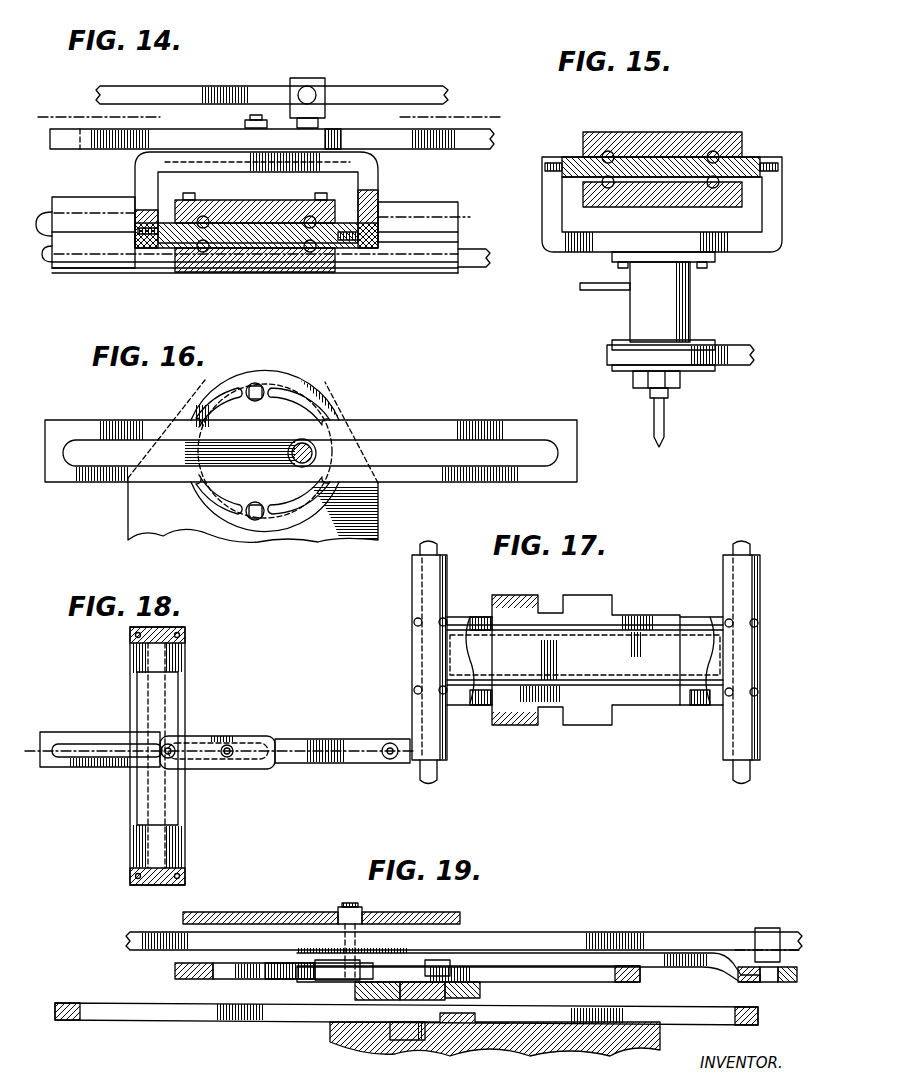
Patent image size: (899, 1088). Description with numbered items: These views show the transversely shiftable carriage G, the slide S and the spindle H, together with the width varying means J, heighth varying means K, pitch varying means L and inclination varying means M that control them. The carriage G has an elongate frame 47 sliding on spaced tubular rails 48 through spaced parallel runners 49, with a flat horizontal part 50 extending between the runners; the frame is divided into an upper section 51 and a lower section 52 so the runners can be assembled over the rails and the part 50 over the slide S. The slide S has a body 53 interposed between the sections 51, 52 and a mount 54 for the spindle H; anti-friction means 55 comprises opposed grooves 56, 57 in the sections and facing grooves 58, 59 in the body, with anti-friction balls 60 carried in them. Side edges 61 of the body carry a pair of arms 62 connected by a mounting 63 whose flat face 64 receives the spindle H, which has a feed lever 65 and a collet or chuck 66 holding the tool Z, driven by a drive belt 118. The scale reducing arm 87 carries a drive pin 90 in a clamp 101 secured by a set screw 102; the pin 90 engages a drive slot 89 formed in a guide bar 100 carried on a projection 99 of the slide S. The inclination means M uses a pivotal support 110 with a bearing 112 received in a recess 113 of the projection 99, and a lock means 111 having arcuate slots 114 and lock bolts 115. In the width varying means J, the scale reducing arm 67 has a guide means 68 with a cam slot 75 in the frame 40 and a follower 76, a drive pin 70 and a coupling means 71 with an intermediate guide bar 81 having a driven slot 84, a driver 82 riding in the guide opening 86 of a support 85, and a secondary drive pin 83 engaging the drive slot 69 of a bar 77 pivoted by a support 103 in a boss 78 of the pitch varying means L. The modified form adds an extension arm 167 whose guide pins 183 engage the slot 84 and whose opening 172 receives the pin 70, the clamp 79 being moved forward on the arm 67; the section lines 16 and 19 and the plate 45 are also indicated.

In FIG. 14, the section line of FIG. 16 is at (47, 115).
In FIG. 18, the section line of FIG. 19 is at (33, 756).
In FIG. 19, the frame 40 is at (232, 928).
In FIG. 19, the plate 45 is at (258, 912).
In FIG. 14, the frame 47 is at (75, 272).
In FIG. 15, the frame 47 is at (667, 128).
In FIG. 17, the frame 47 is at (452, 584).
In FIG. 14, the rails 48 is at (470, 262).
In FIG. 17, the rails 48 is at (445, 774).
In FIG. 14, the runners 49 is at (432, 208).
In FIG. 17, the runners 49 is at (412, 604).
In FIG. 14, the flat horizontal part 50 is at (277, 268).
In FIG. 15, the flat horizontal part 50 is at (650, 199).
In FIG. 17, the flat horizontal part 50 is at (690, 703).
In FIG. 14, the upper section 51 is at (240, 200).
In FIG. 15, the upper section 51 is at (630, 156).
In FIG. 17, the upper section 51 is at (458, 620).
In FIG. 14, the lower section 52 is at (235, 272).
In FIG. 15, the lower section 52 is at (690, 200).
In FIG. 17, the lower section 52 is at (468, 705).
In FIG. 14, the body 53 is at (352, 255).
In FIG. 15, the body 53 is at (571, 156).
In FIG. 15, the mount 54 is at (542, 200).
In FIG. 14, the anti-friction means 55 is at (208, 256).
In FIG. 15, the anti-friction means 55 is at (718, 150).
In FIG. 14, the groove 56 is at (206, 218).
In FIG. 15, the groove 56 is at (608, 151).
In FIG. 14, the groove 57 is at (310, 254).
In FIG. 15, the groove 57 is at (608, 190).
In FIG. 17, the groove 57 is at (692, 628).
In FIG. 14, the groove 58 is at (308, 218).
In FIG. 15, the groove 58 is at (709, 150).
In FIG. 17, the groove 58 is at (595, 680).
In FIG. 14, the groove 59 is at (200, 254).
In FIG. 15, the groove 59 is at (716, 190).
In FIG. 14, the anti-friction balls 60 is at (362, 226).
In FIG. 15, the anti-friction balls 60 is at (602, 184).
In FIG. 15, the side edges 61 is at (548, 178).
In FIG. 15, the arms 62 is at (545, 226).
In FIG. 15, the mounting 63 is at (728, 246).
In FIG. 15, the face 64 is at (592, 252).
In FIG. 15, the lever 65 is at (595, 290).
In FIG. 15, the collet or chuck 66 is at (638, 382).
In FIG. 19, the scale reducing arm 67 is at (653, 930).
In FIG. 19, the guide means 68 is at (335, 918).
In FIG. 19, the drive slot 69 is at (135, 1012).
In FIG. 18, the drive pin 70 is at (388, 758).
In FIG. 19, the drive pin 70 is at (784, 984).
In FIG. 18, the coupling means 71 is at (188, 676).
In FIG. 19, the coupling means 71 is at (175, 968).
In FIG. 19, the cam slot 75 is at (368, 909).
In FIG. 19, the follower 76 is at (347, 907).
In FIG. 19, the bar 77 is at (66, 1000).
In FIG. 19, the boss 78 is at (640, 1035).
In FIG. 19, the clamp 79 is at (766, 928).
In FIG. 18, the intermediate guide bar 81 is at (75, 732).
In FIG. 19, the intermediate guide bar 81 is at (632, 982).
In FIG. 18, the driver 82 is at (178, 709).
In FIG. 19, the driver 82 is at (470, 992).
In FIG. 19, the secondary drive pin 83 is at (405, 1030).
In FIG. 18, the driven slot 84 is at (98, 756).
In FIG. 19, the driven slot 84 is at (216, 978).
In FIG. 18, the support 85 is at (134, 656).
In FIG. 19, the support 85 is at (354, 991).
In FIG. 18, the guide opening 86 is at (134, 846).
In FIG. 19, the guide opening 86 is at (408, 982).
In FIG. 14, the scale reducing arm 87 is at (250, 88).
In FIG. 16, the drive slot 89 is at (447, 442).
In FIG. 14, the drive pin 90 is at (261, 113).
In FIG. 16, the drive pin 90 is at (288, 453).
In FIG. 14, the projection 99 is at (362, 160).
In FIG. 16, the projection 99 is at (348, 535).
In FIG. 14, the guide bar 100 is at (115, 150).
In FIG. 16, the guide bar 100 is at (100, 420).
In FIG. 14, the clamp 101 is at (305, 78).
In FIG. 14, the set screw 102 is at (316, 95).
In FIG. 19, the pivotal support 103 is at (340, 1026).
In FIG. 14, the pivotal support 110 is at (338, 132).
In FIG. 16, the pivotal support 110 is at (298, 387).
In FIG. 16, the lock means 111 is at (262, 385).
In FIG. 14, the bearing 112 is at (210, 165).
In FIG. 14, the recess 113 is at (320, 152).
In FIG. 16, the arcuate slots 114 is at (300, 405).
In FIG. 16, the lock bolts 115 is at (252, 400).
In FIG. 15, the drive belt 118 is at (735, 366).
In FIG. 18, the extension arm 167 is at (308, 738).
In FIG. 19, the extension arm 167 is at (660, 966).
In FIG. 18, the opening 172 is at (393, 742).
In FIG. 19, the opening 172 is at (748, 994).
In FIG. 18, the guide pins 183 is at (239, 738).
In FIG. 19, the guide pins 183 is at (318, 968).
In FIG. 14, the transversely shiftable carriage G is at (405, 274).
In FIG. 15, the transversely shiftable carriage G is at (695, 128).
In FIG. 17, the transversely shiftable carriage G is at (720, 584).
In FIG. 19, the transversely shiftable carriage G is at (318, 1040).
In FIG. 15, the work cutting spindle H is at (703, 302).
In FIG. 19, the width varying means J is at (585, 930).
In FIG. 14, the heighth varying means K is at (393, 84).
In FIG. 19, the vertical pitch varying means L is at (213, 1025).
In FIG. 14, the horizontal inclination varying means M is at (450, 128).
In FIG. 16, the horizontal inclination varying means M is at (378, 424).
In FIG. 14, the slide S is at (148, 252).
In FIG. 15, the slide S is at (753, 159).
In FIG. 16, the slide S is at (128, 522).
In FIG. 17, the slide S is at (585, 722).
In FIG. 15, the tool or cutter Z is at (676, 417).